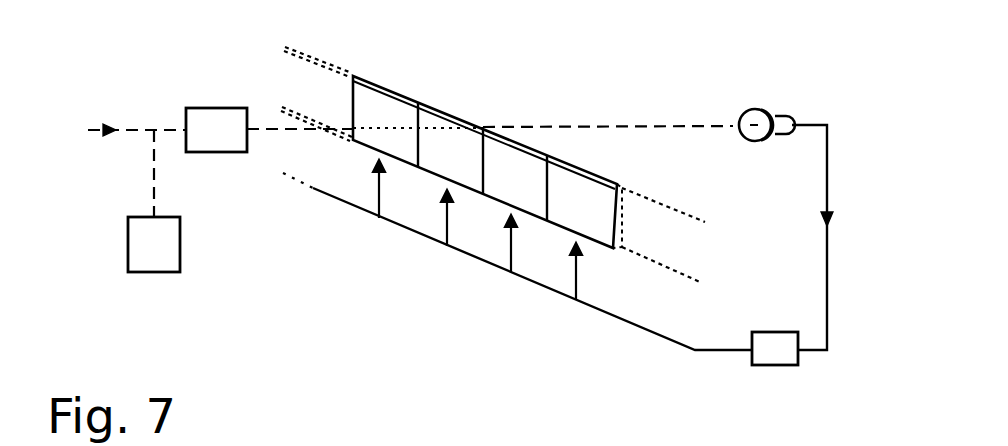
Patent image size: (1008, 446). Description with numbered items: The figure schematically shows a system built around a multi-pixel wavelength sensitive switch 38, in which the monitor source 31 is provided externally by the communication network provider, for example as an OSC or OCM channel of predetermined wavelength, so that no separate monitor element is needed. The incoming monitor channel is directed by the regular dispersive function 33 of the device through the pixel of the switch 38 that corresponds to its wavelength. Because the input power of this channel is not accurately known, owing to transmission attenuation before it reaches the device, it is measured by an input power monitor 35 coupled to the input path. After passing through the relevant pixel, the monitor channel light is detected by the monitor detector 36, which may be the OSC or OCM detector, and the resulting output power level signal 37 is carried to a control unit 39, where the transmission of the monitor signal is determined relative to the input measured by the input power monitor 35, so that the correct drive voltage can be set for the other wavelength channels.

The monitor source 31 is at (110, 130).
The dispersive function 33 is at (217, 108).
The input power monitor 35 is at (180, 240).
The monitor detector 36 is at (758, 109).
The output power level signal 37 is at (827, 222).
The multi-pixel wavelength sensitive switch 38 is at (394, 88).
The detector unit 39 is at (778, 365).